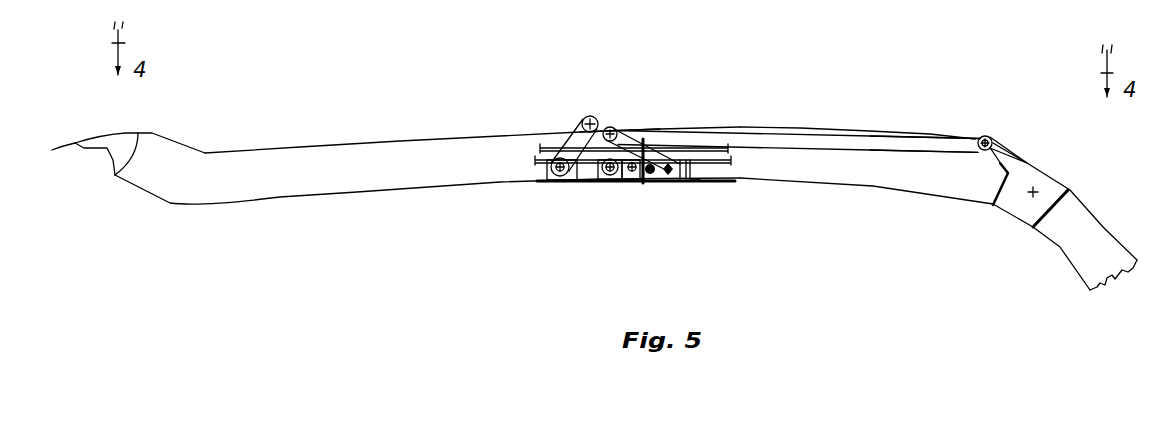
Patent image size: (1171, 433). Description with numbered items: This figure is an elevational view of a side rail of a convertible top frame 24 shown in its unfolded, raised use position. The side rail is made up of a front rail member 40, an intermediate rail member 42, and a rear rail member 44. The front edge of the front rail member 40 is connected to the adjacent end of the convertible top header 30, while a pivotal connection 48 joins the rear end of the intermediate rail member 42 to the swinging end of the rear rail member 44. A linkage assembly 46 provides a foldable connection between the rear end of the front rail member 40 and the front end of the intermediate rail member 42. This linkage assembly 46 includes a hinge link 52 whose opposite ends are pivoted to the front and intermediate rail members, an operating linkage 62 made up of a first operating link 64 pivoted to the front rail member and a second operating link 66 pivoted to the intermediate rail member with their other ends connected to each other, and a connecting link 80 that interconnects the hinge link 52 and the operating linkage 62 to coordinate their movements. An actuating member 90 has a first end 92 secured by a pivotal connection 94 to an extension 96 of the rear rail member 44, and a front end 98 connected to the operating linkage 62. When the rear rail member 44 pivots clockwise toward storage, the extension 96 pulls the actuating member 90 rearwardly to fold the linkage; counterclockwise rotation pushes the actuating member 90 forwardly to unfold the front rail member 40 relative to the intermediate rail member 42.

The convertible top frame 24 is at (583, 88).
The convertible top header 30 is at (122, 160).
The front rail member 40 is at (357, 168).
The intermediate rail member 42 is at (873, 168).
The rear rail member 44 is at (1085, 253).
The linkage assembly 46 is at (657, 118).
The pivotal connection 48 is at (1035, 190).
The hinge link 52 is at (633, 174).
The operating linkage 62 is at (576, 119).
The first operating link 64 is at (568, 137).
The second operating link 66 is at (605, 114).
The connecting link 80 is at (626, 165).
The actuating member 90 is at (792, 128).
The first end 92 is at (950, 132).
The pivotal connection 94 is at (988, 139).
The extension 96 is at (1007, 145).
The front end 98 is at (638, 127).